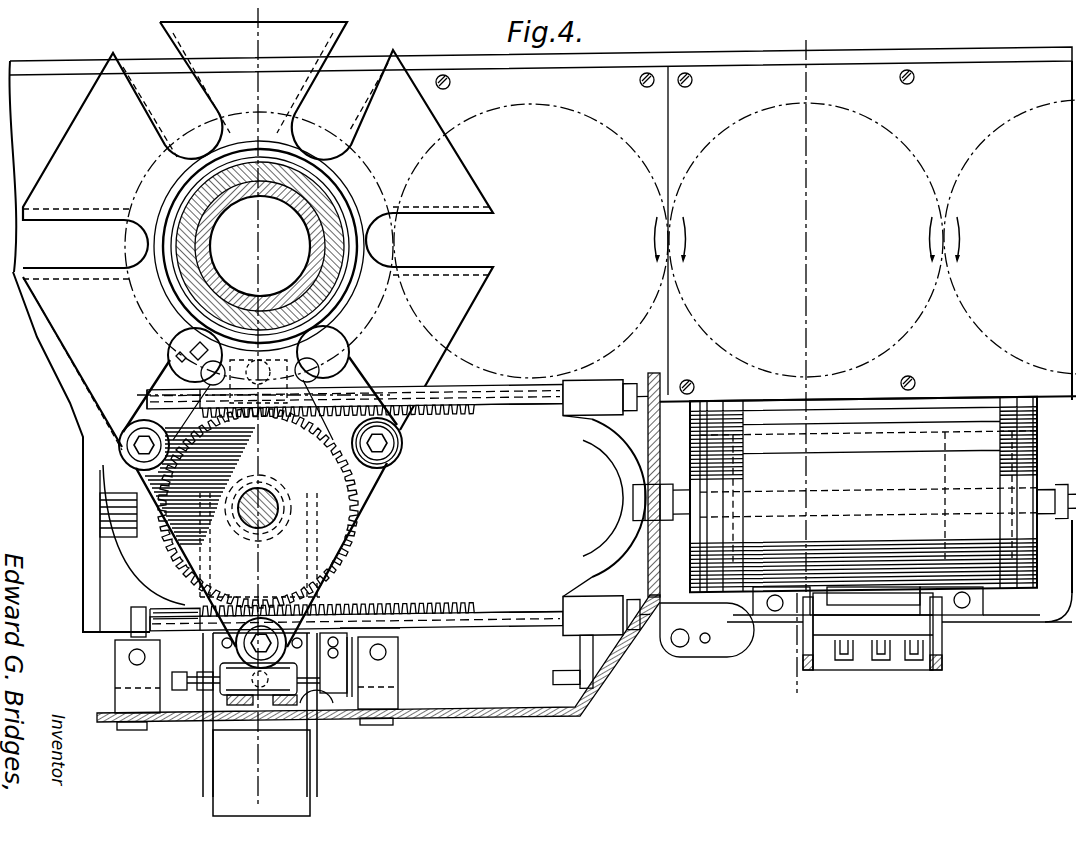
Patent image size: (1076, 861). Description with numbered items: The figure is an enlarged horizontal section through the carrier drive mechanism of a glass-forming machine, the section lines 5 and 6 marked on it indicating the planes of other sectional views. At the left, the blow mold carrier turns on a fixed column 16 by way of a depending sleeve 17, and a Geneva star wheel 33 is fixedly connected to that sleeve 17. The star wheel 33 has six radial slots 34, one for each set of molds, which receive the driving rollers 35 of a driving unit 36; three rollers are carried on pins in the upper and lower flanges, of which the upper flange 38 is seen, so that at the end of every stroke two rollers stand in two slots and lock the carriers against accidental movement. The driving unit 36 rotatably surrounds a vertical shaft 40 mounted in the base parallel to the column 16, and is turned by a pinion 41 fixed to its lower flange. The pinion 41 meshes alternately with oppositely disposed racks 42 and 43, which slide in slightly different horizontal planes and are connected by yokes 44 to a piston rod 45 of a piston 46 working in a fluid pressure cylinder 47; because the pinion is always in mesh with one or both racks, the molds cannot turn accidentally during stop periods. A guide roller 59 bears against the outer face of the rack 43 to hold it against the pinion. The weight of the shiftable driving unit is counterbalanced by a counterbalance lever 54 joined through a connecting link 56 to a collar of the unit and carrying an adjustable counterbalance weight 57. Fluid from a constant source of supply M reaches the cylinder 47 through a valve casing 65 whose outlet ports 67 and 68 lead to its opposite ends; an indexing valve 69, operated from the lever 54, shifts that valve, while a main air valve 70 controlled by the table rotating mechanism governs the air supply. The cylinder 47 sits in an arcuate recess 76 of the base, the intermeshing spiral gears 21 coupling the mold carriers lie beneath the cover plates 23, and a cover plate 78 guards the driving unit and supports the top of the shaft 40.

The section line 5- 5 is at (269, 32).
The section line 6- 6 is at (818, 40).
The column 16 is at (303, 272).
The sleeve 17 is at (217, 281).
The intermeshing gears 21 is at (585, 117).
The cover plates 23 is at (540, 320).
The Geneva star wheel 33 is at (258, 236).
The radial slots 34 is at (157, 131).
The driving rollers 35 is at (400, 452).
The driving unit 36 is at (400, 441).
The upper flange 38 is at (384, 488).
The vertical shaft 40 is at (265, 498).
The pinion 41 is at (360, 552).
The rack 42 is at (492, 622).
The rack 43 is at (446, 396).
The yokes 44 is at (616, 452).
The piston rod 45 is at (772, 501).
The piston 46 is at (952, 471).
The fluid pressure cylinder 47 is at (830, 425).
The counterbalance lever 54 is at (318, 753).
The connecting link 56 is at (292, 496).
The counterbalance weight 57 is at (261, 717).
The guide roller 59 is at (297, 359).
The valve casing 65 is at (920, 630).
The outlet port 67 is at (833, 673).
The outlet port 68 is at (913, 673).
The indexing valve 69 is at (327, 700).
The main air valve 70 is at (237, 680).
The arcuate shaped recess 76 is at (1053, 592).
The cover plate 78 is at (504, 717).
The constant source of supply M is at (872, 685).